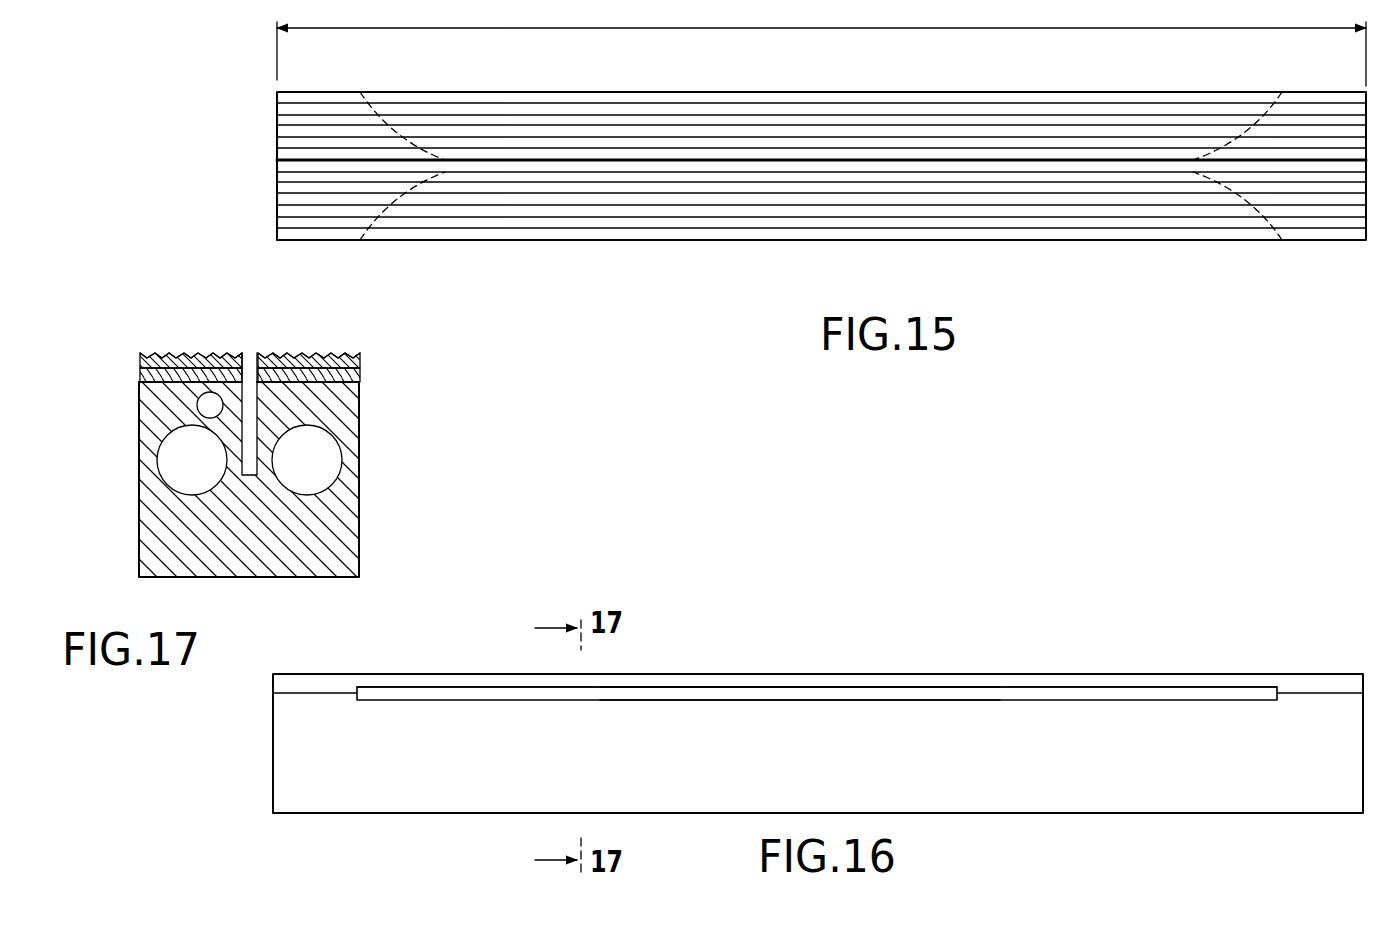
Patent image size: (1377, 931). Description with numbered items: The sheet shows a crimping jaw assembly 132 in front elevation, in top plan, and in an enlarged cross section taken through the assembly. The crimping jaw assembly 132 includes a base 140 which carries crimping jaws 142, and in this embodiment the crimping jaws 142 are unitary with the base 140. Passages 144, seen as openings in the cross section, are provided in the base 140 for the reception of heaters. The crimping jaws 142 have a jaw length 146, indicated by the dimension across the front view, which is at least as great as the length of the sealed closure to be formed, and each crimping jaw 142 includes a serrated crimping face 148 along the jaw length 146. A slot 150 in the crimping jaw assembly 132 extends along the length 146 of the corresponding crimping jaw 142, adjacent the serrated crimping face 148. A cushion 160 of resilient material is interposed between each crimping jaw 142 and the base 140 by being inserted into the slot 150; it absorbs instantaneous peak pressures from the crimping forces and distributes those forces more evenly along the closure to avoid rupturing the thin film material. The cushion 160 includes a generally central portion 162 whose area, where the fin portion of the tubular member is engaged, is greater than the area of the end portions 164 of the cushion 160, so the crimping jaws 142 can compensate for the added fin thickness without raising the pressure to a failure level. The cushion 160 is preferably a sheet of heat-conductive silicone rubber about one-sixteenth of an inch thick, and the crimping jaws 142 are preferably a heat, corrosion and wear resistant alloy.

In FIG. 15, the crimping jaw assembly 132 is at (435, 244).
In FIG. 17, the crimping jaw assembly 132 is at (335, 516).
In FIG. 17, the base 140 is at (153, 537).
In FIG. 16, the base 140 is at (350, 797).
In FIG. 15, the crimping jaws 142 is at (725, 100).
In FIG. 17, the crimping jaws 142 is at (140, 357).
In FIG. 16, the crimping jaws 142 is at (405, 682).
In FIG. 17, the passages 144 is at (342, 463).
In FIG. 15, the jaw length 146 is at (822, 27).
In FIG. 15, the serrated crimping face 148 is at (1083, 120).
In FIG. 17, the serrated crimping face 148 is at (197, 355).
In FIG. 16, the serrated crimping face 148 is at (1025, 672).
In FIG. 17, the slot 150 is at (168, 383).
In FIG. 16, the slot 150 is at (873, 692).
In FIG. 15, the cushion 160 is at (901, 242).
In FIG. 17, the cushion 160 is at (136, 381).
In FIG. 16, the cushion 160 is at (974, 704).
In FIG. 15, the central portion 162 is at (892, 123).
In FIG. 16, the central portion 162 is at (832, 688).
In FIG. 15, the end portions 164 is at (438, 123).
In FIG. 16, the end portions 164 is at (397, 703).